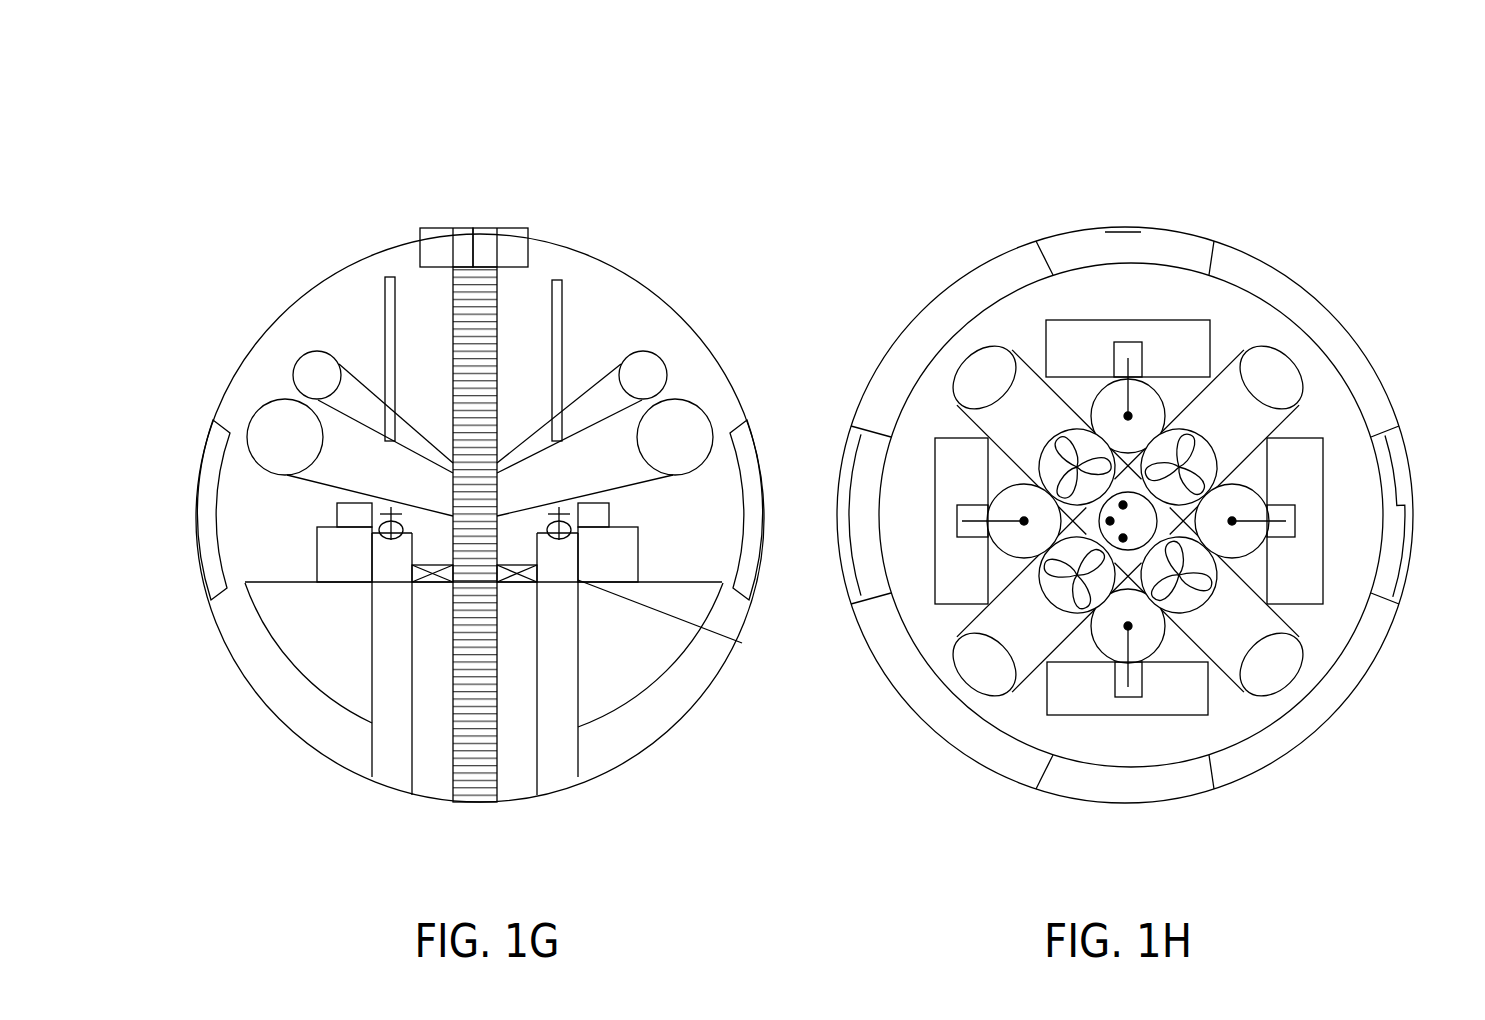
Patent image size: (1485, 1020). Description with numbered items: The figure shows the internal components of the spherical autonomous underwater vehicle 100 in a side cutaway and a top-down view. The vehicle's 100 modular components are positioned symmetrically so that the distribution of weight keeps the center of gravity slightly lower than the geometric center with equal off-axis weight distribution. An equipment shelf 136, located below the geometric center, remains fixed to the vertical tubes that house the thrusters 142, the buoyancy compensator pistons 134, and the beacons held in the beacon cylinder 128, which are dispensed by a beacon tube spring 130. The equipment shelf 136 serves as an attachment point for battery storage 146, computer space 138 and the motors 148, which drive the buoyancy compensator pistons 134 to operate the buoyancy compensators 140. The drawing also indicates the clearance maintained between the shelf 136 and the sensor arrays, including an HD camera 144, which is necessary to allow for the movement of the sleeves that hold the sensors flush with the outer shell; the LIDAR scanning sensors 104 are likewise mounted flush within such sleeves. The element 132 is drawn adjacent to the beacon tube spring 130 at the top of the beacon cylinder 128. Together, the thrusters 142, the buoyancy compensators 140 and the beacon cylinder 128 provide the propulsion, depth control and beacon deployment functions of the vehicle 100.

In FIG. 1G, the autonomous underwater vehicle 100 is at (205, 115).
In FIG. 1H, the autonomous underwater vehicle 100 is at (825, 115).
In FIG. 1G, the LIDAR scanning sensor 104 is at (837, 452).
In FIG. 1G, the beacon cylinder 128 is at (455, 466).
In FIG. 1G, the beacon tube spring 130 is at (450, 244).
In FIG. 1G, the cap right portion 132 is at (512, 240).
In FIG. 1G, the buoyancy compensator pistons 134 is at (495, 466).
In FIG. 1G, the equipment shelf 136 is at (298, 597).
In FIG. 1G, the computer space 138 is at (593, 707).
In FIG. 1G, the buoyancy compensators 140 is at (553, 565).
In FIG. 1H, the buoyancy compensators 140 is at (1128, 521).
In FIG. 1G, the thrusters 142 is at (437, 597).
In FIG. 1H, the thrusters 142 is at (1130, 523).
In FIG. 1H, the HD camera 144 is at (1108, 213).
In FIG. 1H, the battery storage 146 is at (1310, 457).
In FIG. 1H, the motors 148 is at (1292, 547).